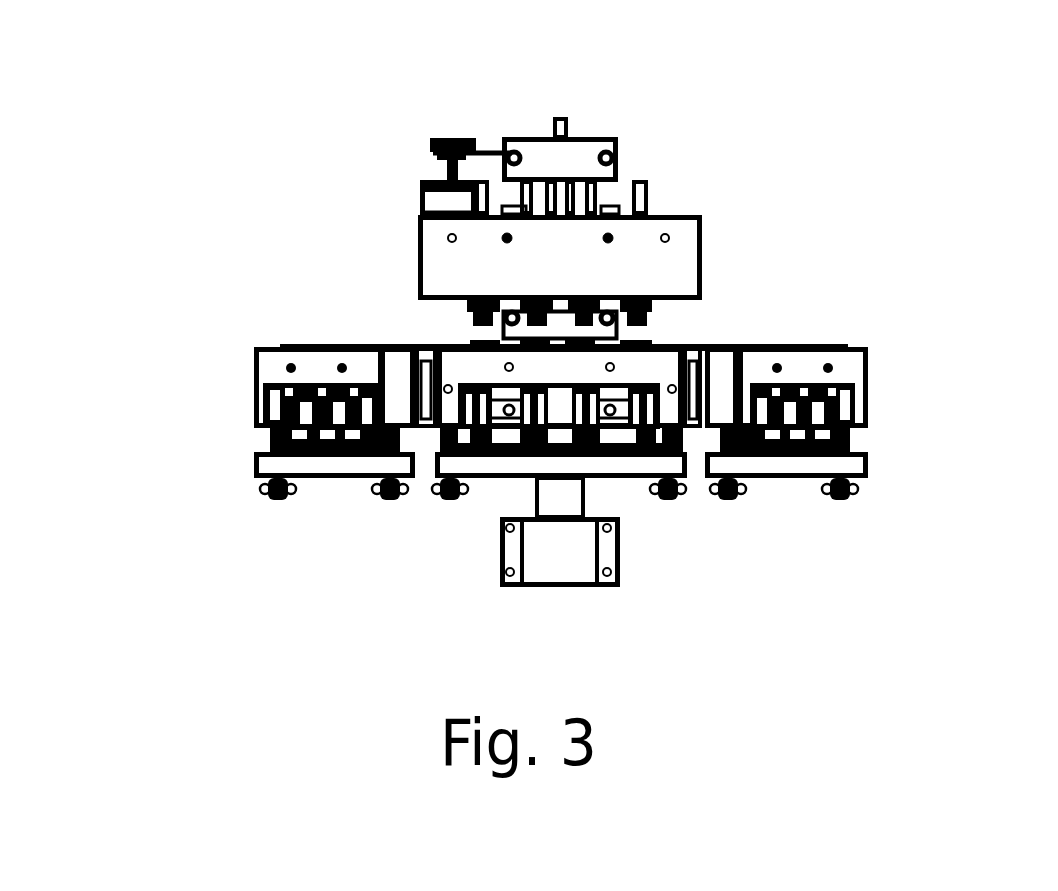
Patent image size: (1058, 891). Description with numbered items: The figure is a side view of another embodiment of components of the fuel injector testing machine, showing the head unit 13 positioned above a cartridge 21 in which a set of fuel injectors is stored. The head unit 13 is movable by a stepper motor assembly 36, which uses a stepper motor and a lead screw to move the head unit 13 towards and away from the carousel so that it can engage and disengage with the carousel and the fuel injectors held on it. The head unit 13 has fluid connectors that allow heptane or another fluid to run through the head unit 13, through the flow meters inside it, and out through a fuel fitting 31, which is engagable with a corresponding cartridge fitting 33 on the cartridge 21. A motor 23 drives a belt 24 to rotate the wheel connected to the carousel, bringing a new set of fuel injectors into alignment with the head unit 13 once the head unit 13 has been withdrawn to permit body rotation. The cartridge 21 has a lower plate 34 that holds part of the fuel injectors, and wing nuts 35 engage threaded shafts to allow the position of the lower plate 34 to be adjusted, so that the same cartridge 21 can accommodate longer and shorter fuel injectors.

The head unit 13 is at (685, 288).
The cartridge 21 is at (858, 360).
The motor 23 is at (423, 185).
The belt 24 is at (488, 148).
The fuel fitting 31 is at (480, 318).
The cartridge fitting 33 is at (470, 348).
The lower plate 34 is at (615, 468).
The wing nut 35 is at (465, 497).
The stepper motor assembly 36 is at (585, 152).